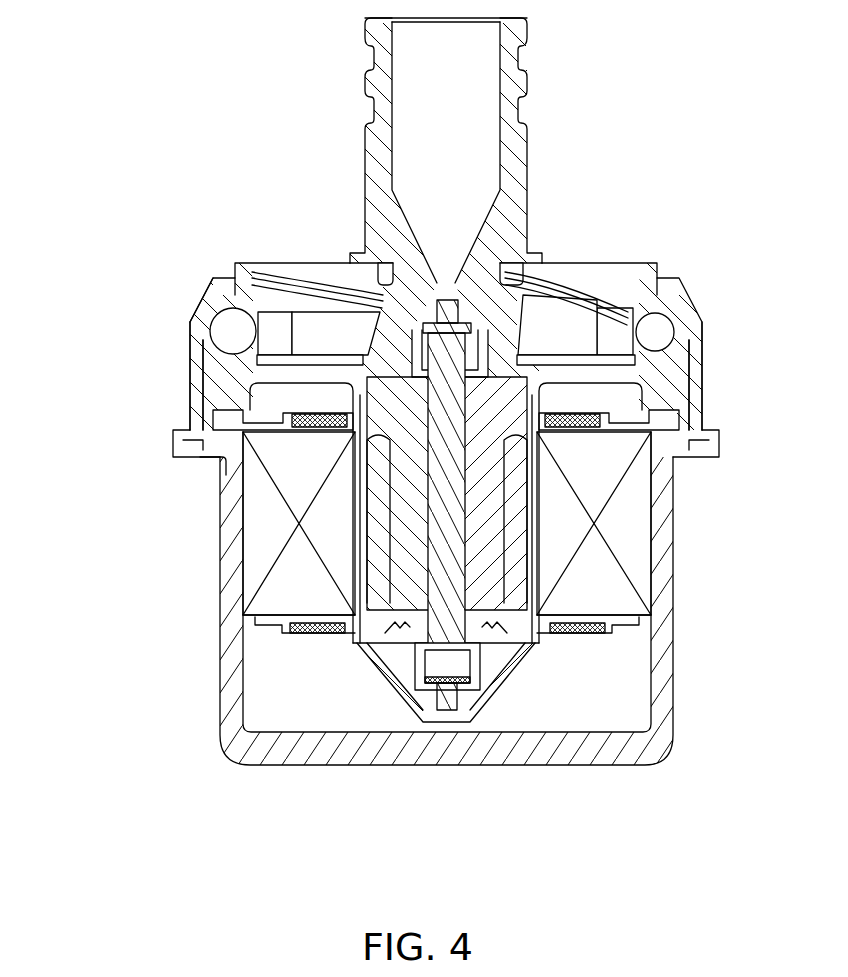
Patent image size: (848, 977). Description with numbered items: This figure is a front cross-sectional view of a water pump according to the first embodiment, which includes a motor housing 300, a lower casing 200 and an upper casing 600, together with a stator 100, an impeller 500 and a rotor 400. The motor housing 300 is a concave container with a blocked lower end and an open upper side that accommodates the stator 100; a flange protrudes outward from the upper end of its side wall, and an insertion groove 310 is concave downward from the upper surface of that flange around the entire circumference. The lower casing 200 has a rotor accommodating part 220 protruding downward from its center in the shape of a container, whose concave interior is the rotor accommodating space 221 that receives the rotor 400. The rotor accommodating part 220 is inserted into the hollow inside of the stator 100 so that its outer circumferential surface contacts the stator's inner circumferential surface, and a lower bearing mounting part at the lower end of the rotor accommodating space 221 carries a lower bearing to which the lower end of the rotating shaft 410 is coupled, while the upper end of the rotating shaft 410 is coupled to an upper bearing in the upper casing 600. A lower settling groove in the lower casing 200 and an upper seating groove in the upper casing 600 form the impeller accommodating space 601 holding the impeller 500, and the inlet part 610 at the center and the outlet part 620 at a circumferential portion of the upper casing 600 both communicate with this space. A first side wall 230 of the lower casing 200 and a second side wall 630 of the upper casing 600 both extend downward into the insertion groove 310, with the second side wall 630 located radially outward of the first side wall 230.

The stator 100 is at (633, 537).
The lower casing 200 is at (190, 350).
The rotor accommodating part 220 is at (390, 683).
The rotor accommodating space 221 is at (360, 642).
The first side wall 230 is at (190, 378).
The motor housing 300 is at (675, 617).
The insertion groove 310 is at (200, 460).
The rotor 400 is at (537, 653).
The rotating shaft 410 is at (467, 663).
The impeller 500 is at (703, 343).
The upper casing 600 is at (662, 303).
The impeller accommodating space 601 is at (347, 264).
The inlet part 610 is at (528, 32).
The outlet part 620 is at (224, 284).
The second side wall 630 is at (188, 418).